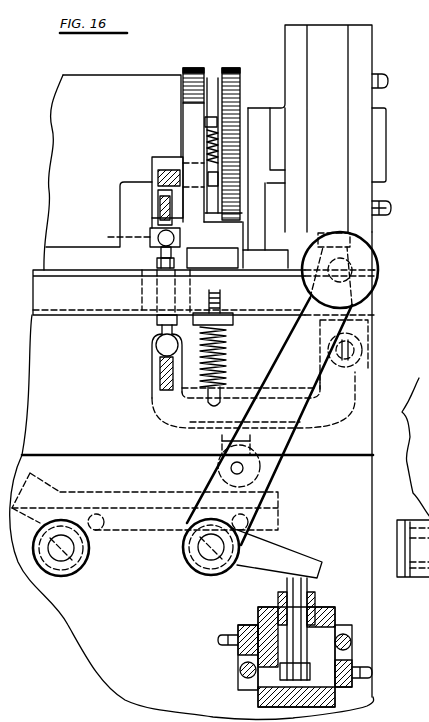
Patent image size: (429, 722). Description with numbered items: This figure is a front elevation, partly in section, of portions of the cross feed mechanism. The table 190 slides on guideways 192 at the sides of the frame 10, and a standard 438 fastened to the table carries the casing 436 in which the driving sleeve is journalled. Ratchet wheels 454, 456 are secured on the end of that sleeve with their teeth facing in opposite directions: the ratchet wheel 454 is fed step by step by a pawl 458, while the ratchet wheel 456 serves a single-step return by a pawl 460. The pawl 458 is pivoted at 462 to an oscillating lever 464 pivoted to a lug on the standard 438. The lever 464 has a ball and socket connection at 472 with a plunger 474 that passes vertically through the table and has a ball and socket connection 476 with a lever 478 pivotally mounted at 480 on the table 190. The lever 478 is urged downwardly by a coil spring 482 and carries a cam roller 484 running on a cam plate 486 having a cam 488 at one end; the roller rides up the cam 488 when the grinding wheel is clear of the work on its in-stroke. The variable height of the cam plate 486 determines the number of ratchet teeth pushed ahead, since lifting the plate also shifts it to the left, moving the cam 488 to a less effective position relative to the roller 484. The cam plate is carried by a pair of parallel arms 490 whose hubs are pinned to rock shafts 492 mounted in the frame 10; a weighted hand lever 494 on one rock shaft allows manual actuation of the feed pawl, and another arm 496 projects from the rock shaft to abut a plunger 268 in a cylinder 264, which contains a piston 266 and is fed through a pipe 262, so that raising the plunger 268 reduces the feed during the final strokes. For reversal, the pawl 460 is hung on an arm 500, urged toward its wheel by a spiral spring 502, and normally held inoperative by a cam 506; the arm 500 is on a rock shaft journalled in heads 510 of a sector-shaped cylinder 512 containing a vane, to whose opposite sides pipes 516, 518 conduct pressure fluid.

The frame 10 is at (130, 634).
The table 190 is at (204, 292).
The guideways 192 is at (404, 405).
The pipe 262 is at (373, 673).
The cylinder 264 is at (352, 646).
The piston 266 is at (240, 668).
The plunger 268 is at (312, 585).
The casing 436 is at (99, 78).
The standard 438 is at (57, 223).
The ratchet wheel 454 is at (190, 68).
The ratchet wheel 456 is at (230, 68).
The pawl 458 is at (192, 122).
The pawl 460 is at (223, 226).
The pivot 462 is at (171, 167).
The oscillating lever 464 is at (160, 193).
The ball and socket connection 472 is at (116, 235).
The plunger 474 is at (157, 260).
The ball and socket connection 476 is at (155, 345).
The lever 478 is at (303, 428).
The pivot 480 is at (356, 352).
The coil spring 482 is at (225, 358).
The cam roller 484 is at (216, 468).
The cam plate 486 is at (135, 492).
The cam 488 is at (47, 476).
The parallel arms 490 is at (97, 536).
The rock shafts 492 is at (200, 555).
The weighted hand lever 494 is at (272, 465).
The arm 496 is at (295, 556).
The arm 500 is at (258, 205).
The spiral spring 502 is at (248, 255).
The cam 506 is at (212, 258).
The heads 510 is at (349, 52).
The sector-shaped cylinder 512 is at (340, 89).
The pipe 516 is at (388, 80).
The pipe 518 is at (390, 203).